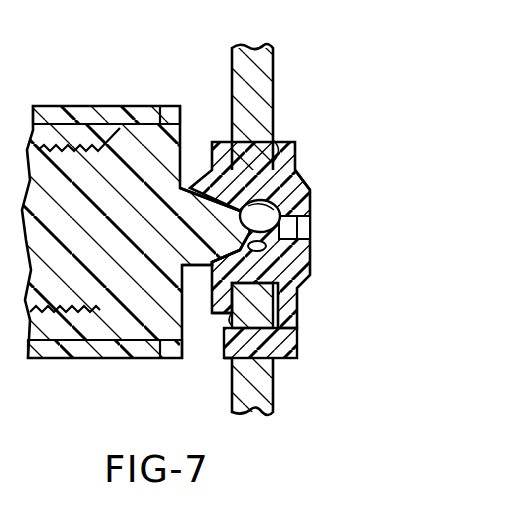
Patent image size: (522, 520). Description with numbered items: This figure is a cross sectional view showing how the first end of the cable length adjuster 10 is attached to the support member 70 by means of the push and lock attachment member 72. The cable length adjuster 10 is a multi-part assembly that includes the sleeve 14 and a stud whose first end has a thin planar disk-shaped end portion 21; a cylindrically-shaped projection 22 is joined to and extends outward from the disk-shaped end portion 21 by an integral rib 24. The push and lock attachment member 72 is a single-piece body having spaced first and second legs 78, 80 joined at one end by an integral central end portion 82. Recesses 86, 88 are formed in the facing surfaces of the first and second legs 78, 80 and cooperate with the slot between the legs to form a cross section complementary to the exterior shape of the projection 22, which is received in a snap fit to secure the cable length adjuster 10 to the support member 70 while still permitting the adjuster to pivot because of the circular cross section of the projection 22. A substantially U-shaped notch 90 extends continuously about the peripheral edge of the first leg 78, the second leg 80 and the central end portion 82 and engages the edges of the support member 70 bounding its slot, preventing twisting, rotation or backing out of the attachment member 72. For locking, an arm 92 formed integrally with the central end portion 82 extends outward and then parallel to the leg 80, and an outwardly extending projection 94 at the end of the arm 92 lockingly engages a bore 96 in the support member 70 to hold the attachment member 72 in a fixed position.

The cable length adjuster 10 is at (136, 188).
The sleeve 14 is at (63, 108).
The disk-shaped end portion 21 is at (170, 106).
The projection 22 is at (298, 240).
The rib 24 is at (188, 186).
The support member 70 is at (275, 62).
The push and lock attachment member 72 is at (267, 236).
The first leg 78 is at (298, 290).
The second leg 80 is at (267, 267).
The central end portion 82 is at (312, 221).
The recess 86 is at (310, 266).
The recess 88 is at (311, 192).
The U-shaped notch 90 is at (276, 136).
The arm 92 is at (298, 332).
The projection 94 is at (233, 350).
The bore 96 is at (232, 372).